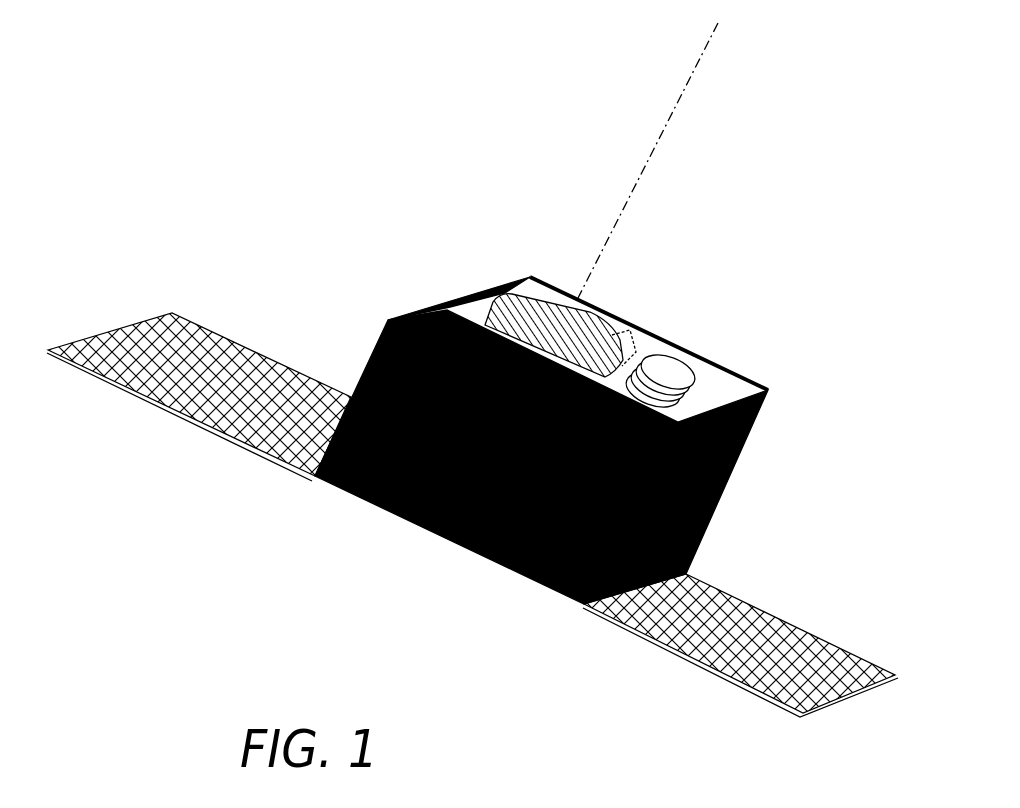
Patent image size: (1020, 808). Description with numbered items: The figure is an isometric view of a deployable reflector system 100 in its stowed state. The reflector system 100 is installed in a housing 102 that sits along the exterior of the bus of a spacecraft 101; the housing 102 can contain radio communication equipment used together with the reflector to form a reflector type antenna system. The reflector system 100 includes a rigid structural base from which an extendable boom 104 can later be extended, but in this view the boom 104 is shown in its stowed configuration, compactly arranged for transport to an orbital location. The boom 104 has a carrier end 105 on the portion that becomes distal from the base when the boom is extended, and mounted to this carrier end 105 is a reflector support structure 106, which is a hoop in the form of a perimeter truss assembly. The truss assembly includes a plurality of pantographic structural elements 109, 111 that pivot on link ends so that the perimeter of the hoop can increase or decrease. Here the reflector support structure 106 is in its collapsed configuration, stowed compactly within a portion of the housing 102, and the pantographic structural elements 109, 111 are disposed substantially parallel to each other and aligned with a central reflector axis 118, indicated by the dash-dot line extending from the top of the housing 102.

The deployable reflector system 100 is at (472, 370).
The spacecraft 101 is at (440, 298).
The housing 102 is at (467, 552).
The extendable boom 104 is at (722, 382).
The carrier end 105 is at (676, 372).
The reflector support structure 106 is at (551, 270).
The pantographic structural element 109 is at (515, 300).
The pantographic structural element 111 is at (507, 300).
The central reflector axis 118 is at (683, 88).